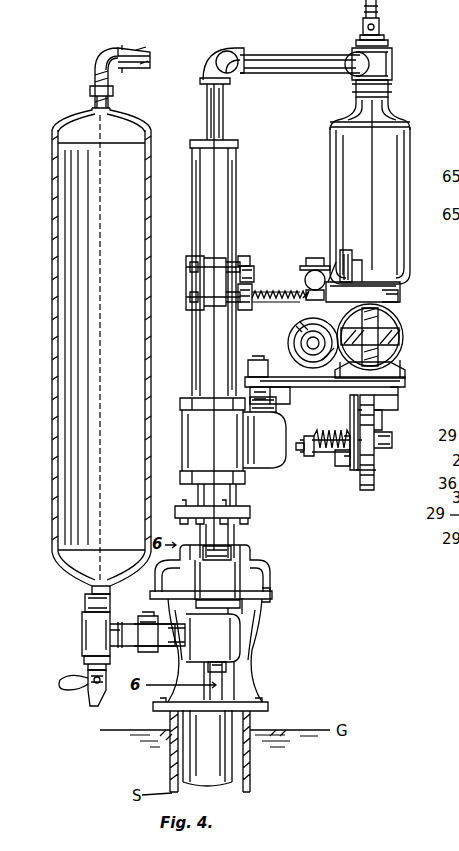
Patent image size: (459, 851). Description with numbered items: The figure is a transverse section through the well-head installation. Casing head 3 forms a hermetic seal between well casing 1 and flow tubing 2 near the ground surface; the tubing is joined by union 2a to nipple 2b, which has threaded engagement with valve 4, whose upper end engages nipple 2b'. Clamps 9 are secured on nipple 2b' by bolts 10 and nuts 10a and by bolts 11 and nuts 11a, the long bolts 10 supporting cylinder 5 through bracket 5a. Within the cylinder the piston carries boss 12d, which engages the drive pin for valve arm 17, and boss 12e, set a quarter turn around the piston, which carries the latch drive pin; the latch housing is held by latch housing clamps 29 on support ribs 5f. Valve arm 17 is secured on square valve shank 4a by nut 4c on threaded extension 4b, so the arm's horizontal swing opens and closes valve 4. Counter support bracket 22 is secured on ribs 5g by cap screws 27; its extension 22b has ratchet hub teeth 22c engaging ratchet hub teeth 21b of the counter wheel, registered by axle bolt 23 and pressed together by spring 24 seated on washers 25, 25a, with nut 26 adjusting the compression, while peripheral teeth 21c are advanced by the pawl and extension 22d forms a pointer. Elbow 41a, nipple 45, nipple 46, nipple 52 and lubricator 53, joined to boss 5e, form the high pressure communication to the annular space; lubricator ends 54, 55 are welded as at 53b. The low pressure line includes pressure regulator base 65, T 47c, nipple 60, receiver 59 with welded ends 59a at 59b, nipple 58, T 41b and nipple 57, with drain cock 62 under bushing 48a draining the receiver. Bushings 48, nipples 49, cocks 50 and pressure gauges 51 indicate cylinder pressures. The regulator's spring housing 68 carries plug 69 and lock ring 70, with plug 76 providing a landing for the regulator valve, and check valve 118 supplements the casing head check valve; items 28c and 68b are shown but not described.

The well casing 1 is at (252, 770).
The flow tubing 2 is at (236, 534).
The union 2a is at (252, 514).
The nipple 2b is at (234, 495).
The nipple 2b' is at (229, 317).
The casing head 3 is at (246, 688).
The valve 4 is at (196, 441).
The square valve shank 4a is at (180, 409).
The threaded extension 4b is at (248, 371).
The nut 4c is at (250, 396).
The cylinder 5 is at (396, 308).
The bracket 5a is at (348, 288).
The boss 5e is at (398, 297).
The latch housing support ribs 5f is at (338, 286).
The ribs 5g is at (406, 377).
The clamps 9 is at (212, 258).
The bolts 10 is at (266, 304).
The nuts 10a is at (250, 292).
The bolts 11 is at (250, 268).
The nuts 11a is at (245, 256).
The boss 12d is at (404, 353).
The boss 12e is at (404, 330).
The valve arm 17 is at (287, 386).
The ratchet hub teeth 21b is at (357, 472).
The peripheral teeth 21c is at (370, 490).
The counter support bracket 22 is at (376, 456).
The extension 22b is at (380, 432).
The ratchet hub teeth 22c is at (356, 466).
The extension 22d is at (396, 412).
The axle bolt 23 is at (392, 446).
The spring 24 is at (330, 436).
The washer 25 is at (306, 436).
The washer 25a is at (345, 456).
The nut 26 is at (304, 452).
The cap screws 27 is at (405, 389).
The valve 28c is at (314, 256).
The latch housing clamps 29 is at (300, 333).
The elbow 41a is at (216, 60).
The T 41b is at (100, 56).
The nipple 45 is at (227, 98).
The nipple 46 is at (305, 58).
The T 47c is at (82, 648).
The bushings 48 is at (388, 43).
The bushing 48a is at (84, 665).
The nipples 49 is at (360, 38).
The cocks 50 is at (380, 25).
The pressure gauges 51 is at (378, 5).
The nipple 52 is at (390, 90).
The lubricator 53 is at (340, 156).
The weld 53b is at (330, 124).
The lubricator end 54 is at (406, 108).
The lubricator end 55 is at (400, 284).
The nipple 57 is at (141, 48).
The nipple 58 is at (90, 92).
The receiver 59 is at (152, 186).
The ends 59a is at (118, 104).
The weld 59b is at (150, 139).
The nipple 60 is at (88, 613).
The drain cock 62 is at (90, 686).
The pressure regulator base 65 is at (240, 639).
The spring housing 68 is at (274, 597).
The fitting 68b is at (180, 648).
The plug 69 is at (204, 550).
The lock ring 70 is at (272, 580).
The plug 76 is at (240, 669).
The check valve 118 is at (148, 616).